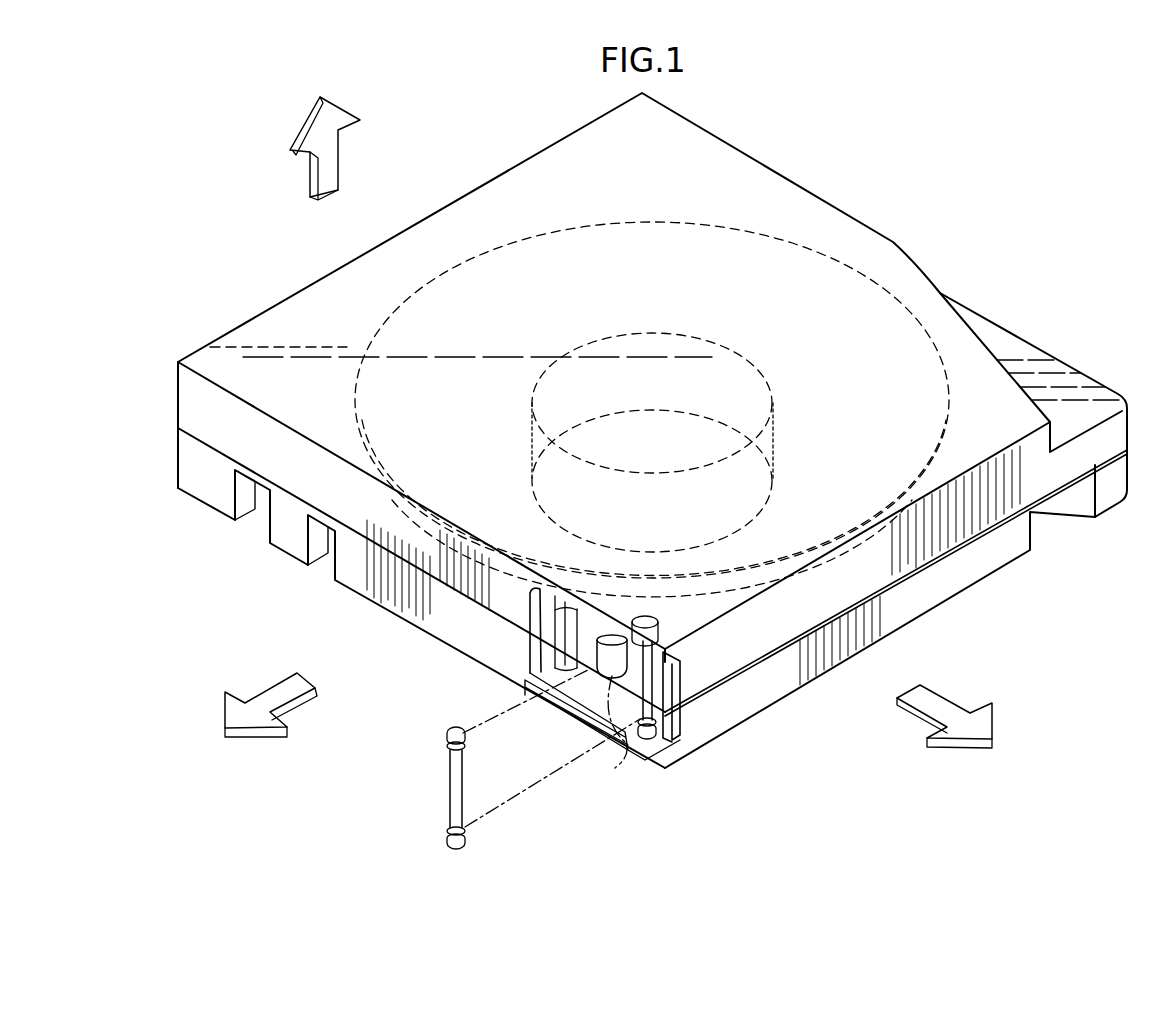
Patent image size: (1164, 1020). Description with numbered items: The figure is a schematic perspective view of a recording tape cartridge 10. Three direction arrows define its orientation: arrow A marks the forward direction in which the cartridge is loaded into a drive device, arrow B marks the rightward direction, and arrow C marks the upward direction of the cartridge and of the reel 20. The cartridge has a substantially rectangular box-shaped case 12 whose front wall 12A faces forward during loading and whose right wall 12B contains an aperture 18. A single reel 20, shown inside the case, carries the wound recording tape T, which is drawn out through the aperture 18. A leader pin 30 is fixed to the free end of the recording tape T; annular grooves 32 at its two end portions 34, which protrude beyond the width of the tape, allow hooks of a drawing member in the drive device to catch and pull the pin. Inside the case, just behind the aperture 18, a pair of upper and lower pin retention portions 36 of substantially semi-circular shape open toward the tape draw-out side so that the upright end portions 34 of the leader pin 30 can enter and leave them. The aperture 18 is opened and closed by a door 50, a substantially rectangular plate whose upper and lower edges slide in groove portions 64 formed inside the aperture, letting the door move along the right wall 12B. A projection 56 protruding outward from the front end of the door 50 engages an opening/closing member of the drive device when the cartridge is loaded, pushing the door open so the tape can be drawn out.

The recording tape cartridge 10 is at (652, 430).
The case 12 is at (652, 430).
The front wall 12A is at (943, 583).
The right wall 12B is at (290, 542).
The reel 20 is at (653, 229).
The aperture 18 is at (563, 695).
The projection 56 is at (495, 658).
The door 50 is at (612, 656).
The groove portions 64 is at (641, 627).
The leader pin 30 is at (448, 793).
The annular grooves 32 is at (448, 750).
The end portions 34 is at (447, 732).
The pin retention portions 36 is at (625, 740).
The recording tape T is at (532, 787).
The arrow A is at (938, 702).
The arrow B is at (282, 690).
The arrow C is at (330, 166).